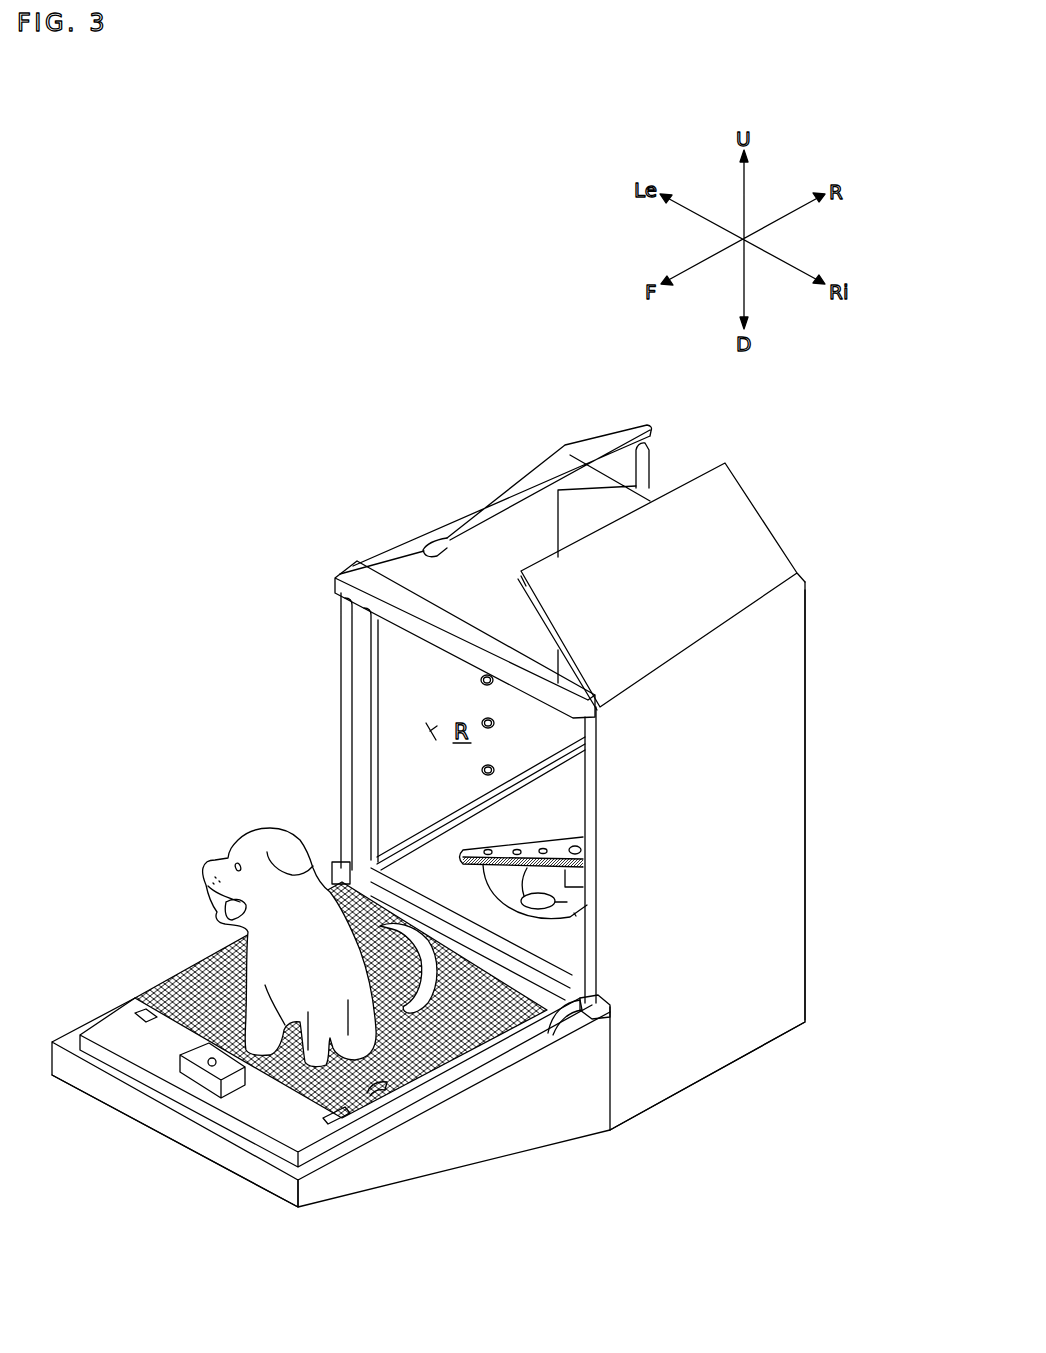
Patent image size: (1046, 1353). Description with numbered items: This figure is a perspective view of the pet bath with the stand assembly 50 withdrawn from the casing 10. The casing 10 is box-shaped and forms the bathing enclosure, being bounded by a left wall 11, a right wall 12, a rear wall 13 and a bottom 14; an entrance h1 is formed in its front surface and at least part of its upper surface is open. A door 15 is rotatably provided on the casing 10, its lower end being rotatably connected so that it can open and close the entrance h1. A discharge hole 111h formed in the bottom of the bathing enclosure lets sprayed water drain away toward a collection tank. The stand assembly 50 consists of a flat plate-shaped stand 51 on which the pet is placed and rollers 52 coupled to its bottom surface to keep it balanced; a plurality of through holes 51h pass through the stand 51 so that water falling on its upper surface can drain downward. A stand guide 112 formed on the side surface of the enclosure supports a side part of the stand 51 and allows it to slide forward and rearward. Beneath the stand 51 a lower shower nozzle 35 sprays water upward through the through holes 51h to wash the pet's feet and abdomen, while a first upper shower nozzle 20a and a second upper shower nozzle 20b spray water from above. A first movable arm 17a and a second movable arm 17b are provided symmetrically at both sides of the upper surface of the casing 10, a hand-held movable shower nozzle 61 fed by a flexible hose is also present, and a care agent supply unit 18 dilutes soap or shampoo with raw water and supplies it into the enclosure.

The casing 10 is at (815, 742).
The left wall 11 is at (415, 672).
The right wall 12 is at (760, 863).
The rear wall 13 is at (805, 909).
The bottom 14 is at (739, 994).
The door 15 is at (330, 1178).
The first movable arm 17a is at (490, 492).
The second movable arm 17b is at (722, 548).
The care agent supply unit 18 is at (212, 1066).
The first upper shower nozzle 20a is at (443, 545).
The second upper shower nozzle 20b is at (520, 597).
The lower shower nozzle 35 is at (527, 853).
The stand assembly 50 is at (605, 1150).
The stand 51 is at (467, 1057).
The through holes 51h is at (317, 1087).
The rollers 52 is at (378, 1095).
The movable shower nozzle 61 is at (652, 452).
The entrance h1 is at (428, 726).
The discharge hole 111h is at (574, 913).
The stand guide 112 is at (378, 846).